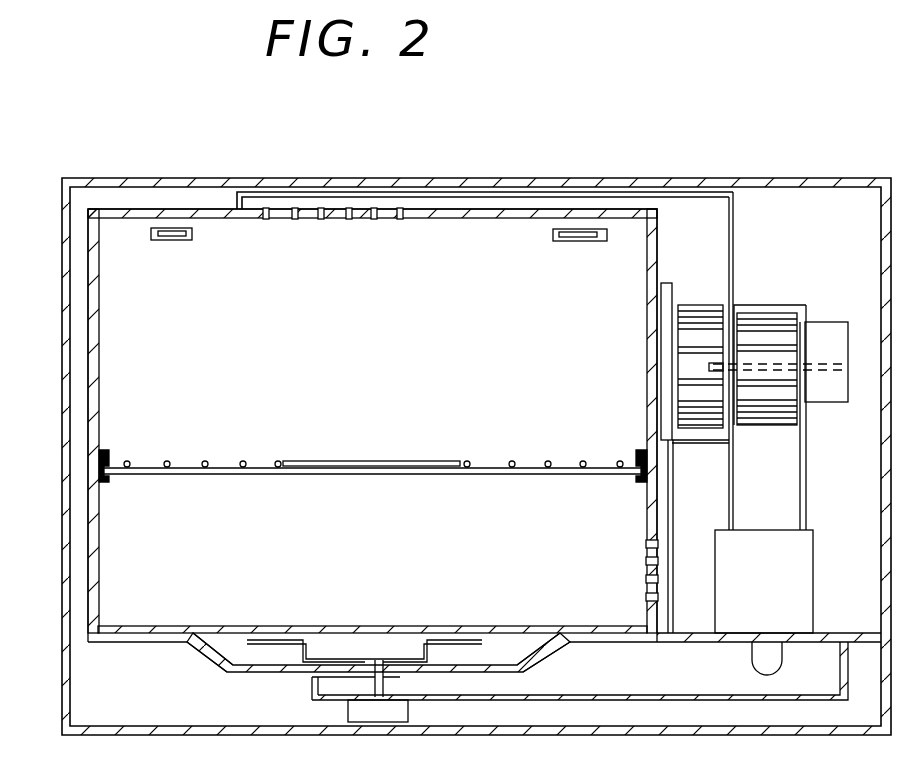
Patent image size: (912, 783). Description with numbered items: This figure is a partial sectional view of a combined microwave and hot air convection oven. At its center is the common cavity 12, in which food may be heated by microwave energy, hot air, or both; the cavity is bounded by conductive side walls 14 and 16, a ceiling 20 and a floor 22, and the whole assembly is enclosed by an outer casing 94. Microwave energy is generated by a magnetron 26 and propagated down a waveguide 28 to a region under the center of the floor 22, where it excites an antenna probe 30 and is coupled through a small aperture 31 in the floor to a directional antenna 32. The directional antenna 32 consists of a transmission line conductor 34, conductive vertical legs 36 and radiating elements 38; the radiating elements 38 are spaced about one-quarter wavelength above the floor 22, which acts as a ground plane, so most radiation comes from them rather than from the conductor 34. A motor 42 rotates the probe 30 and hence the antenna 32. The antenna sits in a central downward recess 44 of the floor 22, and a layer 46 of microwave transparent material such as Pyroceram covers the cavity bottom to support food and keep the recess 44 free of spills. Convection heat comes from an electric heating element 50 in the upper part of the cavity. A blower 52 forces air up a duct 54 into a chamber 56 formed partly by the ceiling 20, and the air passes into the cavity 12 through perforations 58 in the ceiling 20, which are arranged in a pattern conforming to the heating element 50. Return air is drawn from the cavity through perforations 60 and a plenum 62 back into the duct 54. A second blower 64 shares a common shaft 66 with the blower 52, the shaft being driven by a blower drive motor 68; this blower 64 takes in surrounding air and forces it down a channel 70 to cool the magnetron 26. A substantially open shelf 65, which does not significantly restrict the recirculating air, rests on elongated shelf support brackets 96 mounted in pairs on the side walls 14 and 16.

The common cavity 12 is at (138, 428).
The side wall 14 is at (650, 302).
The side wall 16 is at (105, 385).
The ceiling 20 is at (134, 220).
The floor 22 is at (176, 632).
The magnetron 26 is at (795, 587).
The waveguide 28 is at (656, 678).
The antenna probe 30 is at (342, 674).
The aperture 31 is at (385, 668).
The directional antenna 32 is at (373, 648).
The transmission line conductor 34 is at (312, 678).
The conductive vertical legs 36 is at (298, 653).
The radiating elements 38 is at (450, 640).
The motor 42 is at (398, 706).
The recess 44 is at (496, 670).
The layer of microwave transparent material 46 is at (128, 625).
The electric heating element 50 is at (181, 241).
The blower 52 is at (697, 330).
The duct 54 is at (718, 248).
The chamber 56 is at (508, 196).
The perforations 58 is at (322, 219).
The perforations 60 is at (650, 598).
The plenum 62 is at (661, 495).
The blower 64 is at (762, 336).
The shelf 65 is at (219, 487).
The common shaft 66 is at (765, 373).
The blower drive motor 68 is at (828, 347).
The channel 70 is at (770, 498).
The outer casing 94 is at (63, 359).
The shelf support brackets 96 is at (641, 457).